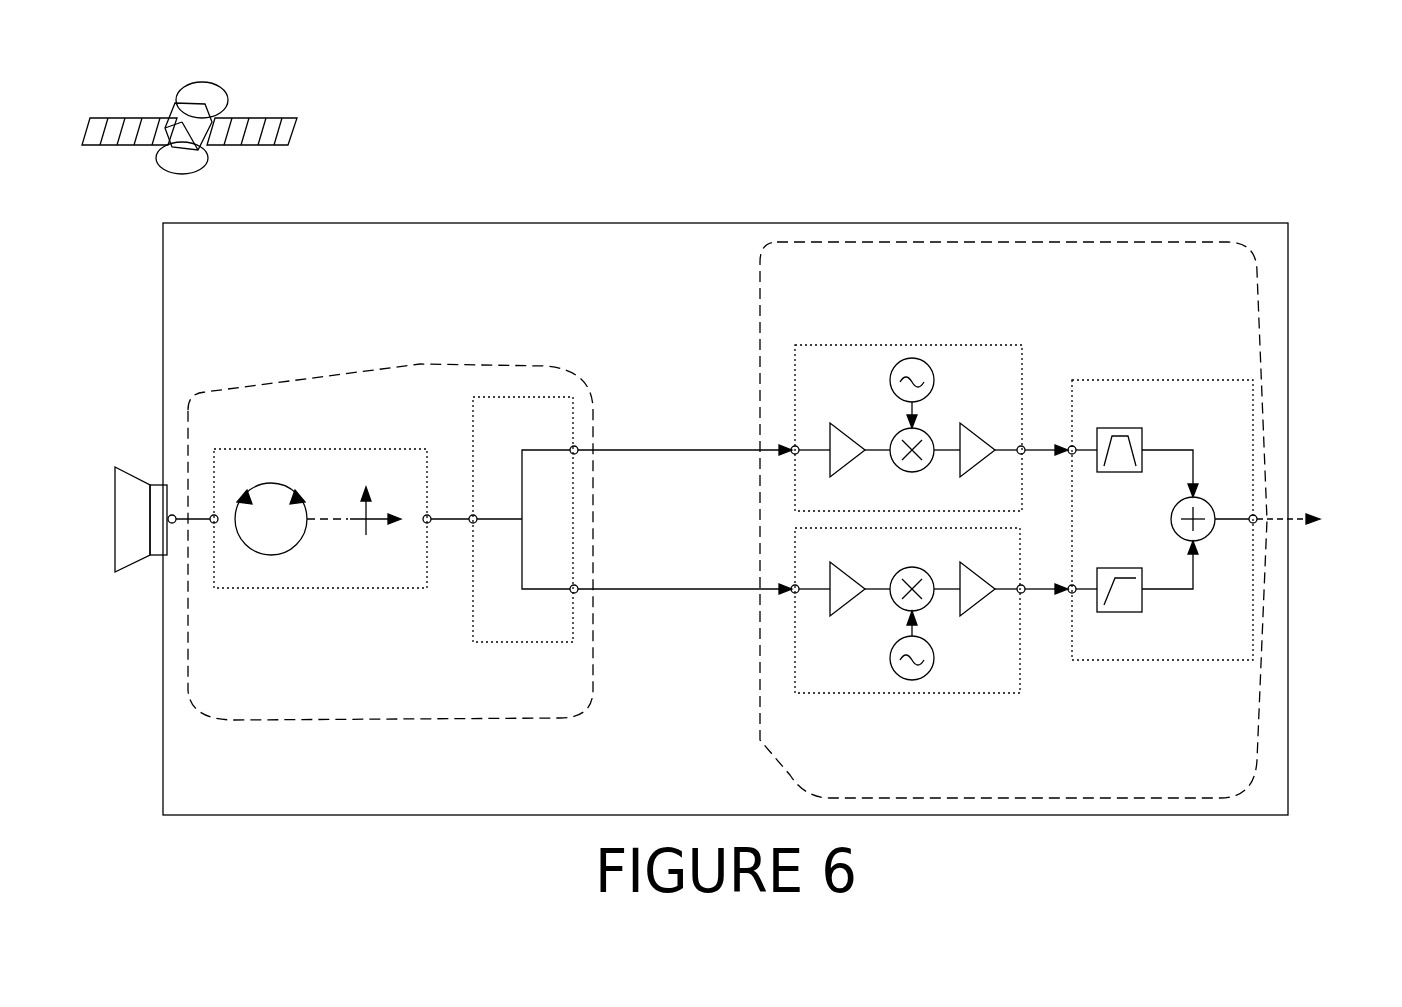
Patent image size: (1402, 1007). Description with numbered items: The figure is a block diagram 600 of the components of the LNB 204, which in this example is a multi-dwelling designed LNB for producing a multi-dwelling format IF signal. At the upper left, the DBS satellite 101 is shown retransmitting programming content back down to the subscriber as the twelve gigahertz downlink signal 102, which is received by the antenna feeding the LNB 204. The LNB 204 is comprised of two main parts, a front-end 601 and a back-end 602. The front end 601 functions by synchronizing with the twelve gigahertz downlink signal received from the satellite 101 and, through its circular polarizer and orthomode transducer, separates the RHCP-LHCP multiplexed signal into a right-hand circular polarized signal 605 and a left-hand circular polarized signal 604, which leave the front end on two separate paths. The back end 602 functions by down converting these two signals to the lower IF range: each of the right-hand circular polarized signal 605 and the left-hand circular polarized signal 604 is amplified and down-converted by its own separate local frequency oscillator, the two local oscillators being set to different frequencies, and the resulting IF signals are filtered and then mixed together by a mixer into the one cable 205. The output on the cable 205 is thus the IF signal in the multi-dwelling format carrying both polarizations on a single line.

The DBS satellite 101 is at (198, 82).
The downlink signal 102 is at (81, 633).
The LNB 204 is at (692, 212).
The cable 205 is at (1357, 455).
The block diagram 600 is at (1253, 103).
The front-end 601 is at (489, 352).
The back-end 602 is at (748, 257).
The left-hand circular polarized signal 604 is at (681, 574).
The RHCP signal 605 is at (664, 395).